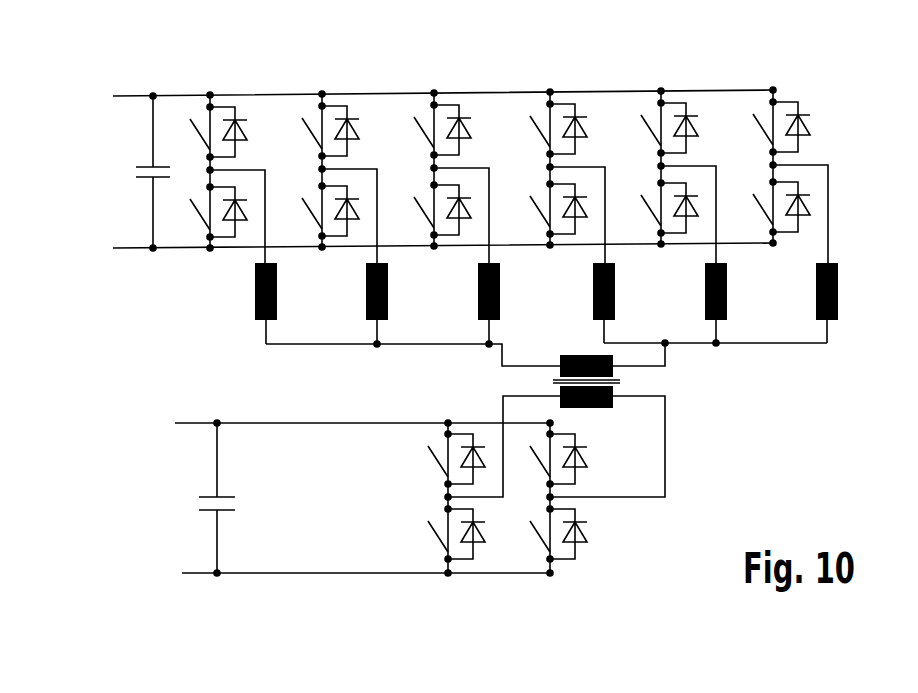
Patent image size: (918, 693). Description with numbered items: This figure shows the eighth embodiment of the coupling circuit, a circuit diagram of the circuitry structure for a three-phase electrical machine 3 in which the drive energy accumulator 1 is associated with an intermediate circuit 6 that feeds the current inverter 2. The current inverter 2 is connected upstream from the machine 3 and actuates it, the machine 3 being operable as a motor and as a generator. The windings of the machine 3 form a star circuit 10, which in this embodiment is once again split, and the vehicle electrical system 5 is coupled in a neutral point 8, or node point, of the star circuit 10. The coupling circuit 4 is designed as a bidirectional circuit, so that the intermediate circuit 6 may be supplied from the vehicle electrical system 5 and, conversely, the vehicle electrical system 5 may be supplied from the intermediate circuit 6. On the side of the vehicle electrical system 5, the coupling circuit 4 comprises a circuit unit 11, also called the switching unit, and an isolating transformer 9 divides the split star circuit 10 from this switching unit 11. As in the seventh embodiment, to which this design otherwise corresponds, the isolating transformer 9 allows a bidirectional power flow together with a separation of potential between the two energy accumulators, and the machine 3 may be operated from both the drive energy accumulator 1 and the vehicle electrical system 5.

The drive energy accumulator 1 is at (72, 229).
The current inverter 2 is at (693, 72).
The three-phase machine 3 is at (848, 303).
The coupling circuit 4 is at (193, 403).
The vehicle electrical system 5 is at (85, 500).
The intermediate circuit 6 is at (128, 160).
The neutral point 8 is at (480, 355).
The isolating transformer 9 is at (603, 407).
The star circuit 10 is at (805, 343).
The circuit unit 11 is at (518, 582).